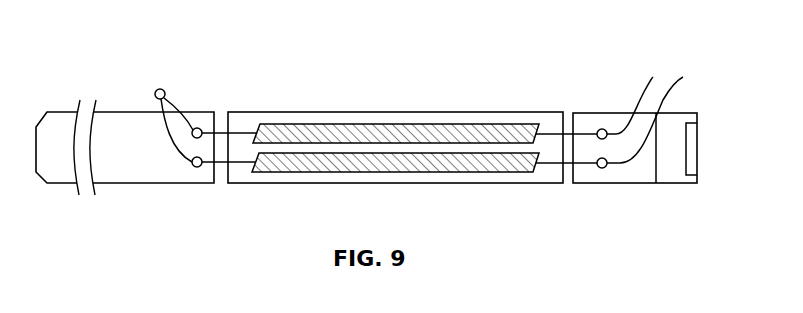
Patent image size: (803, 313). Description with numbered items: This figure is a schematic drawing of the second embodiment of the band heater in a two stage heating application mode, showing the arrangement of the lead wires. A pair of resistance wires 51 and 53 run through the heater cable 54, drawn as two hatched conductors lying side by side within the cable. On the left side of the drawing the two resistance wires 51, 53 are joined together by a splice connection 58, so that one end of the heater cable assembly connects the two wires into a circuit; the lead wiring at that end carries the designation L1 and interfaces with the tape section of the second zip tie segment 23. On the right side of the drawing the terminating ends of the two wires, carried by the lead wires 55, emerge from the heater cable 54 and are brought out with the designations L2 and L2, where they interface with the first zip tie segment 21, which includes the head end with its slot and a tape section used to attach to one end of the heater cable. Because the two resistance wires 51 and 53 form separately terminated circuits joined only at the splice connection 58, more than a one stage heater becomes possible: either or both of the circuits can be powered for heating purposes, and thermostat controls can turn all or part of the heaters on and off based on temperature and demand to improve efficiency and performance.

The first zip tie segment 21 is at (638, 173).
The second zip tie segment 23 is at (148, 173).
The resistance wire 51 is at (307, 132).
The resistance wire 53 is at (447, 162).
The heater cable 54 is at (525, 112).
The lead wires 55 is at (593, 165).
The splice connection 58 is at (165, 92).
The first lead line L1 is at (157, 90).
The terminating ends designation L2 is at (682, 71).